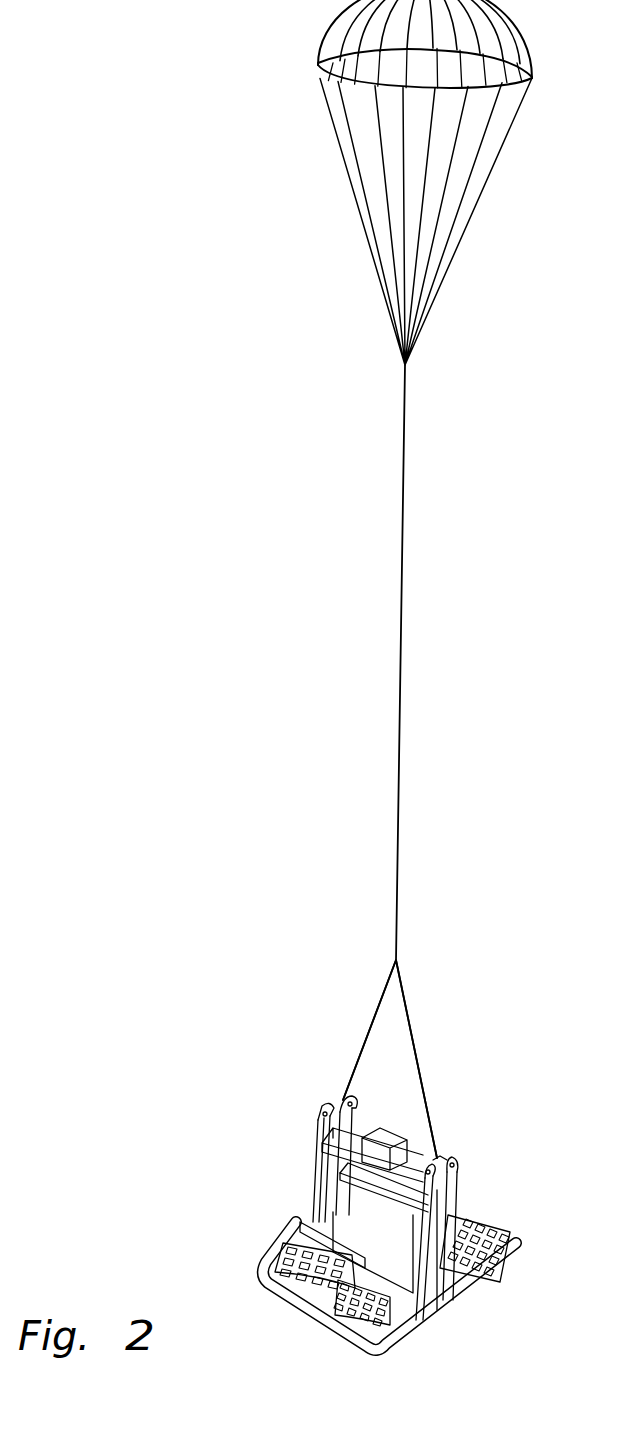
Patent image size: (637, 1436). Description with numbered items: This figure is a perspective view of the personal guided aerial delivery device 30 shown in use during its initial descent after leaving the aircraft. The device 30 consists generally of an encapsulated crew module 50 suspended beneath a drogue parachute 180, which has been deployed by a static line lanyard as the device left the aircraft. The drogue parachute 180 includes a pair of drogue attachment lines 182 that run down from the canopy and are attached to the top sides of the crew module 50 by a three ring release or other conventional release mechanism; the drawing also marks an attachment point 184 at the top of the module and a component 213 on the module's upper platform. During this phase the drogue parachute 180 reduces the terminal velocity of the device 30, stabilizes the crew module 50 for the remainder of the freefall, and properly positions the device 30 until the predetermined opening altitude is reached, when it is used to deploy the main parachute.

The personal guided aerial delivery device 30 is at (177, 933).
The crew module 50 is at (283, 1172).
The drogue parachute 180 is at (310, 107).
The drogue attachment lines 182 is at (362, 1040).
The strap attachment point 184 is at (441, 1160).
The equipment box 213 is at (387, 1138).